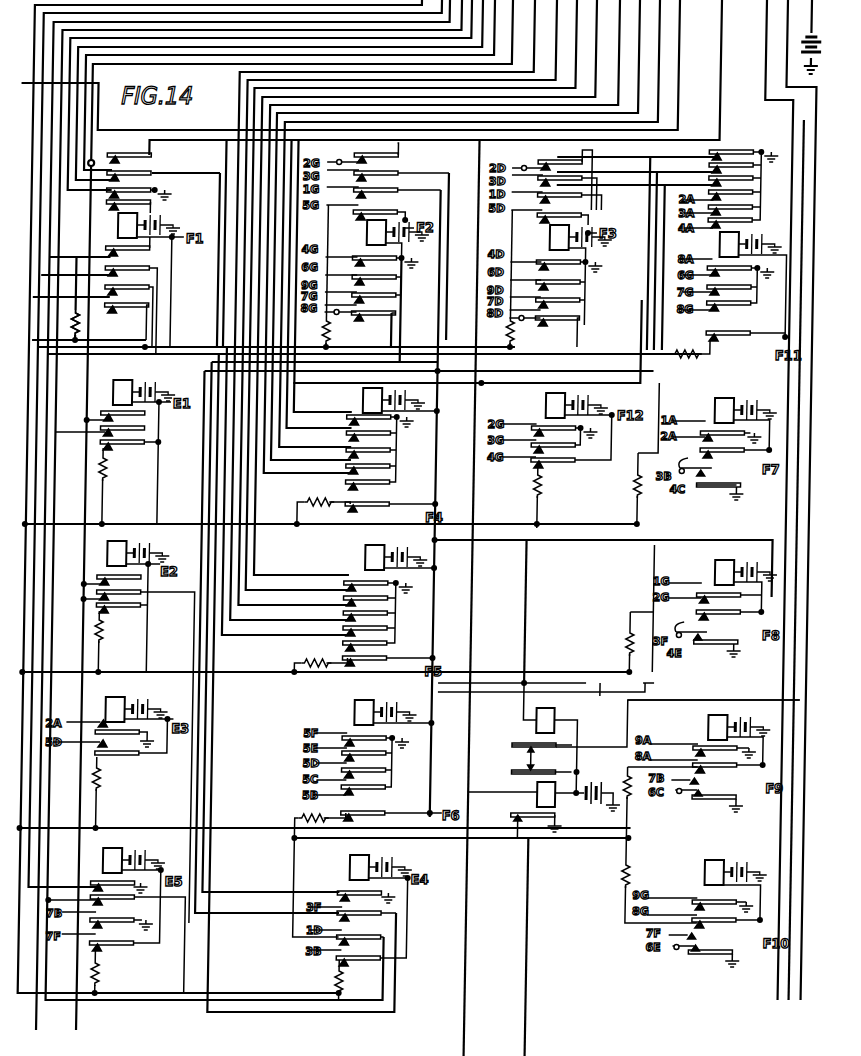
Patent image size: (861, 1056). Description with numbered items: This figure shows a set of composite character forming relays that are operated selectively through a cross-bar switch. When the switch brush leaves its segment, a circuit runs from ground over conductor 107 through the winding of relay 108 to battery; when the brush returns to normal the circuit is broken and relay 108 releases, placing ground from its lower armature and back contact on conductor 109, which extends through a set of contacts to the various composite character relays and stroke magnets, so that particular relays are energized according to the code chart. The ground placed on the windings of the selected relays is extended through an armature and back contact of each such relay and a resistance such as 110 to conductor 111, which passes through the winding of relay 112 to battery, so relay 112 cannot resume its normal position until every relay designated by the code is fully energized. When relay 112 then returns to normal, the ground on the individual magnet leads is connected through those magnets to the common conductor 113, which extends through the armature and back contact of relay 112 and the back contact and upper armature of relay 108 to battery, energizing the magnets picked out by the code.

The conductor 107 is at (165, 138).
The relay 108 is at (551, 790).
The conductor 109 is at (538, 890).
The resistance 110 is at (76, 320).
The conductor 111 is at (538, 683).
The relay 112 is at (549, 720).
The common conductor 113 is at (700, 708).